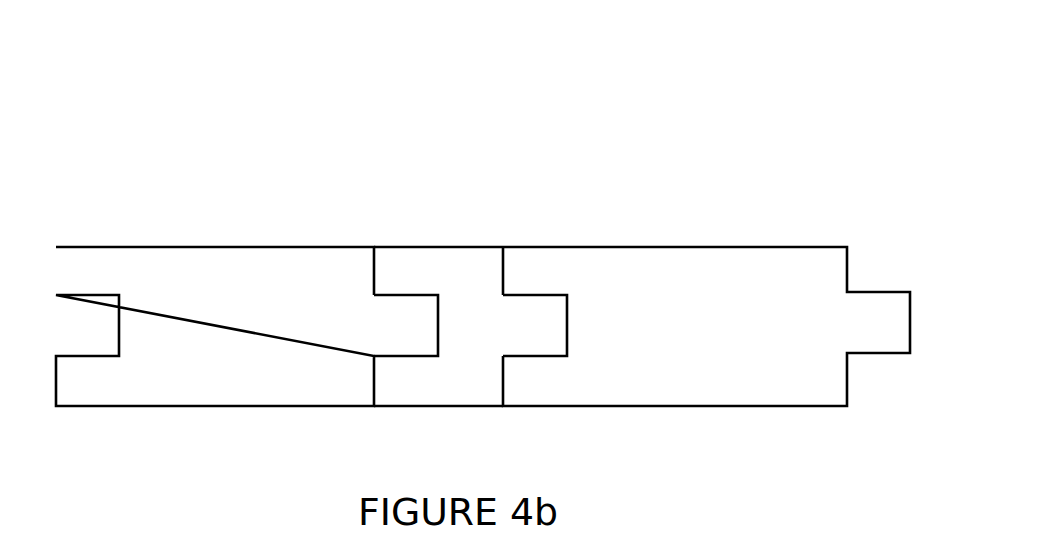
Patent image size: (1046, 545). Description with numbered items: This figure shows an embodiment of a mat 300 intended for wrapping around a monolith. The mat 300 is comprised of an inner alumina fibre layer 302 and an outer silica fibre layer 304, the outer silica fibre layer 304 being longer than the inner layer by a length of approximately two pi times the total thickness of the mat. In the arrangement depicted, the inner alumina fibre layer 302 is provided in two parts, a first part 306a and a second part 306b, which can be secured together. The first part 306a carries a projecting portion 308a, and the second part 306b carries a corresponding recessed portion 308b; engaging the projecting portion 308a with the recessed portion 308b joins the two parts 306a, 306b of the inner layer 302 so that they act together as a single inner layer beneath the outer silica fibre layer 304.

The mat 300 is at (699, 196).
The inner alumina fibre layer 302 is at (735, 260).
The outer silica fibre layer 304 is at (452, 255).
The first part 306a is at (222, 383).
The second part 306b is at (722, 383).
The projecting portion 308a is at (397, 318).
The recessed portion 308b is at (538, 319).